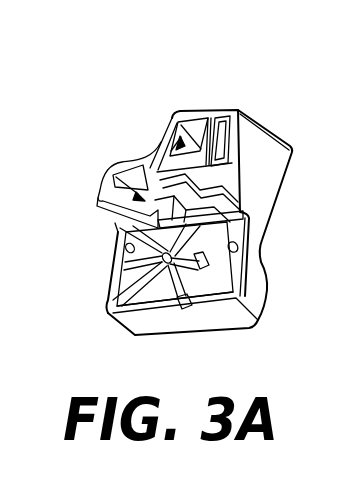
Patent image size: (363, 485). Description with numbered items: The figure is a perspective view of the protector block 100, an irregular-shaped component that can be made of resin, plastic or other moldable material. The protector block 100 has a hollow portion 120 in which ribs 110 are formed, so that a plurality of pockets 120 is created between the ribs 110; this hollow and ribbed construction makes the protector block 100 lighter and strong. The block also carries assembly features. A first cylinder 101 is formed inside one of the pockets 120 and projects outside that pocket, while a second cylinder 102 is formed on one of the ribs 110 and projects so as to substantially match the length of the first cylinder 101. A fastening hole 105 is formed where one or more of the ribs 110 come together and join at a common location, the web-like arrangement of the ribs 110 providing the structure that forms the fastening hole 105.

The protector block 100 is at (104, 147).
The hollow portion / pockets 120 is at (165, 132).
The ribs 110 is at (106, 194).
The fastening hole 105 is at (140, 268).
The first cylinder 101 is at (126, 248).
The second cylinder 102 is at (258, 256).